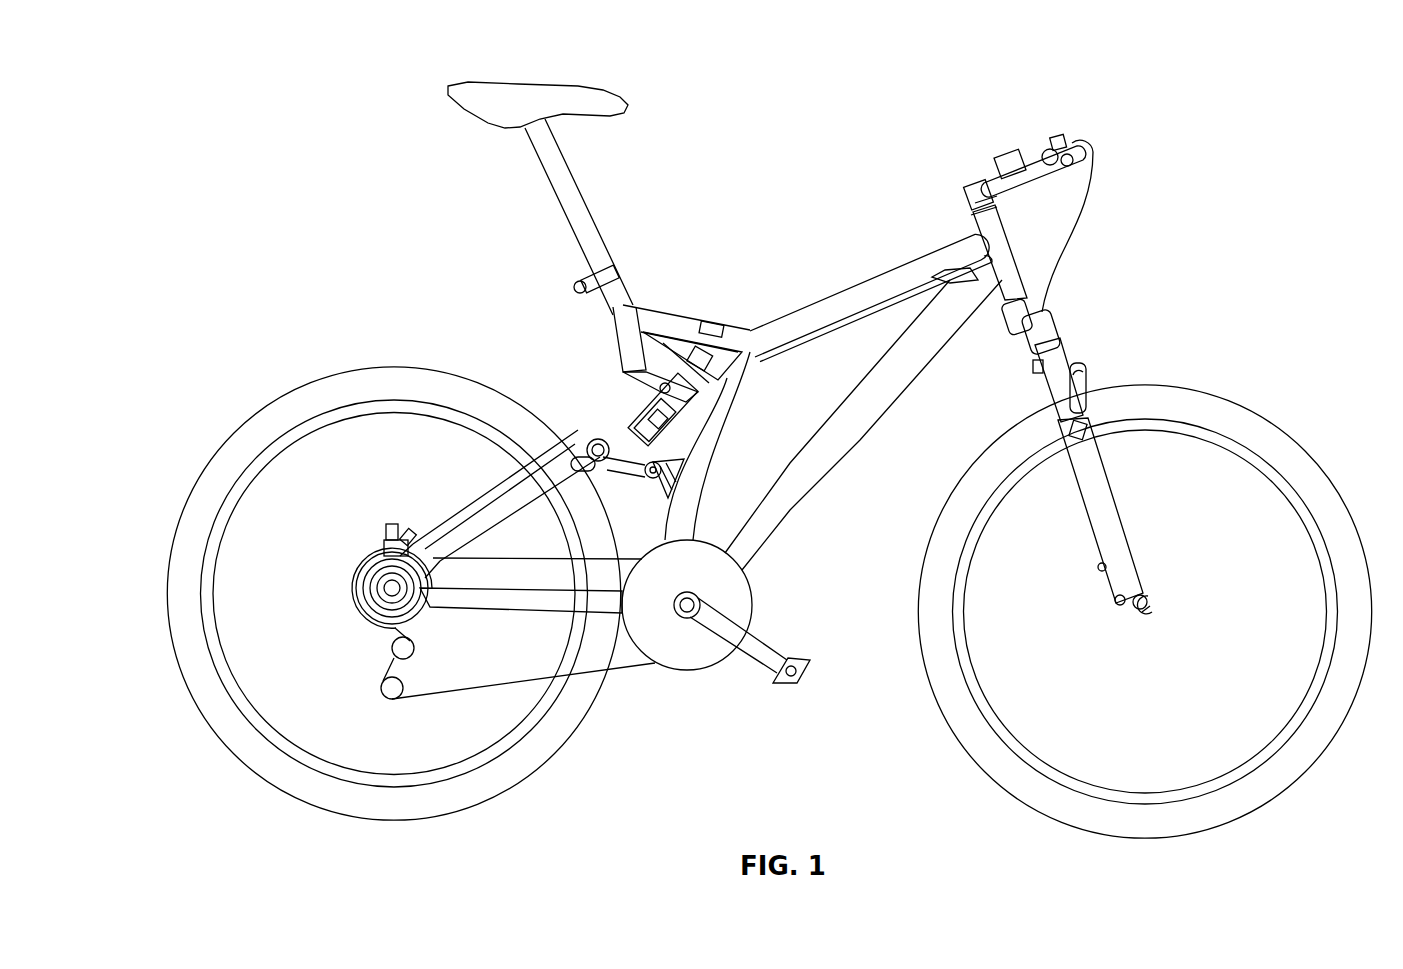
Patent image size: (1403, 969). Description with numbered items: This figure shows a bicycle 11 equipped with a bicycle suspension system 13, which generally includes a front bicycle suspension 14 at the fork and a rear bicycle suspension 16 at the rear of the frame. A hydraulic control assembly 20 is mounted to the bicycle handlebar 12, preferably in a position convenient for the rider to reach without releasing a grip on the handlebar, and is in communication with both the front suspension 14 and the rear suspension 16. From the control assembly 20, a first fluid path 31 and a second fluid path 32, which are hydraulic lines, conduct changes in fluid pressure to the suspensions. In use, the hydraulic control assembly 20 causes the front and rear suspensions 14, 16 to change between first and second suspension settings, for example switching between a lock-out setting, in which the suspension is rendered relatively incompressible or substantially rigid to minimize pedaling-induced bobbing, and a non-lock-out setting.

The bicycle 11 is at (806, 248).
The bicycle handlebar 12 is at (1046, 150).
The bicycle suspension system 13 is at (810, 532).
The front bicycle suspension 14 is at (1084, 352).
The rear bicycle suspension 16 is at (653, 418).
The hydraulic control assembly 20 is at (1068, 142).
The first fluid path 31 is at (1063, 236).
The second fluid path 32 is at (1030, 214).